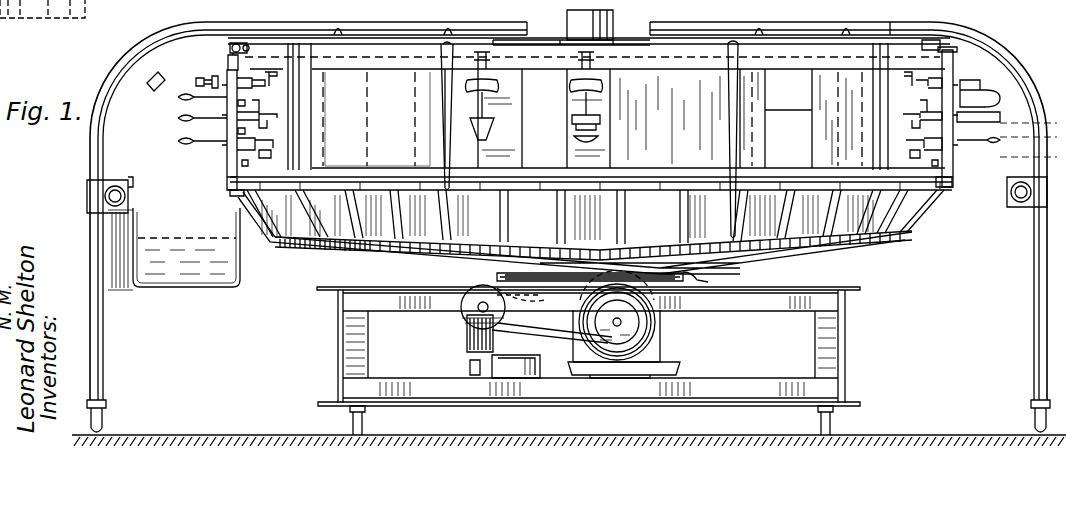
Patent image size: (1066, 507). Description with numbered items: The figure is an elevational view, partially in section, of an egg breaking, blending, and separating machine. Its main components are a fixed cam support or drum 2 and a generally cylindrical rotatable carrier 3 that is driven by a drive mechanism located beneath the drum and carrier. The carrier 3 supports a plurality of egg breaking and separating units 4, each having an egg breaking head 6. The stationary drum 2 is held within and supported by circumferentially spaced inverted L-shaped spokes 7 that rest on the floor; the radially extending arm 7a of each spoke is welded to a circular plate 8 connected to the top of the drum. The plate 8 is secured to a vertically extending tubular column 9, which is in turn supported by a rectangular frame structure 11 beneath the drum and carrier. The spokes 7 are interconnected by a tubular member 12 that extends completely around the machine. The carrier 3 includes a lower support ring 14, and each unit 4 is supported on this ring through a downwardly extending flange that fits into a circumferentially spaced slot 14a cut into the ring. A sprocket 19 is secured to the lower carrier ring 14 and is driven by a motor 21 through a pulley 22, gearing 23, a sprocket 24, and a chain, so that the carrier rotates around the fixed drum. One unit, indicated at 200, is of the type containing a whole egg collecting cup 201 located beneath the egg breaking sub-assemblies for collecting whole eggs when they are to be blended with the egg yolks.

The fixed cam support or drum 2 is at (590, 138).
The rotatable carrier 3 is at (210, 158).
The egg breaking and separating unit 4 is at (182, 74).
The egg breaking head 6 is at (162, 99).
The inverted L-shaped spoke 7 is at (998, 40).
The radially extending arm 7a is at (400, 20).
The circular plate 8 is at (629, 42).
The tubular column 9 is at (567, 13).
The rectangular frame structure 11 is at (846, 346).
The tubular member 12 is at (215, 52).
The lower support ring 14 is at (48, 12).
The slot 14a is at (850, 188).
The sprocket 19 is at (704, 283).
The motor 21 is at (655, 330).
The pulley 22 is at (534, 335).
The gearing 23 is at (500, 310).
The sprocket 24 is at (507, 271).
The unit containing a whole egg collecting cup 200 is at (460, 126).
The whole egg collecting cup 201 is at (510, 124).